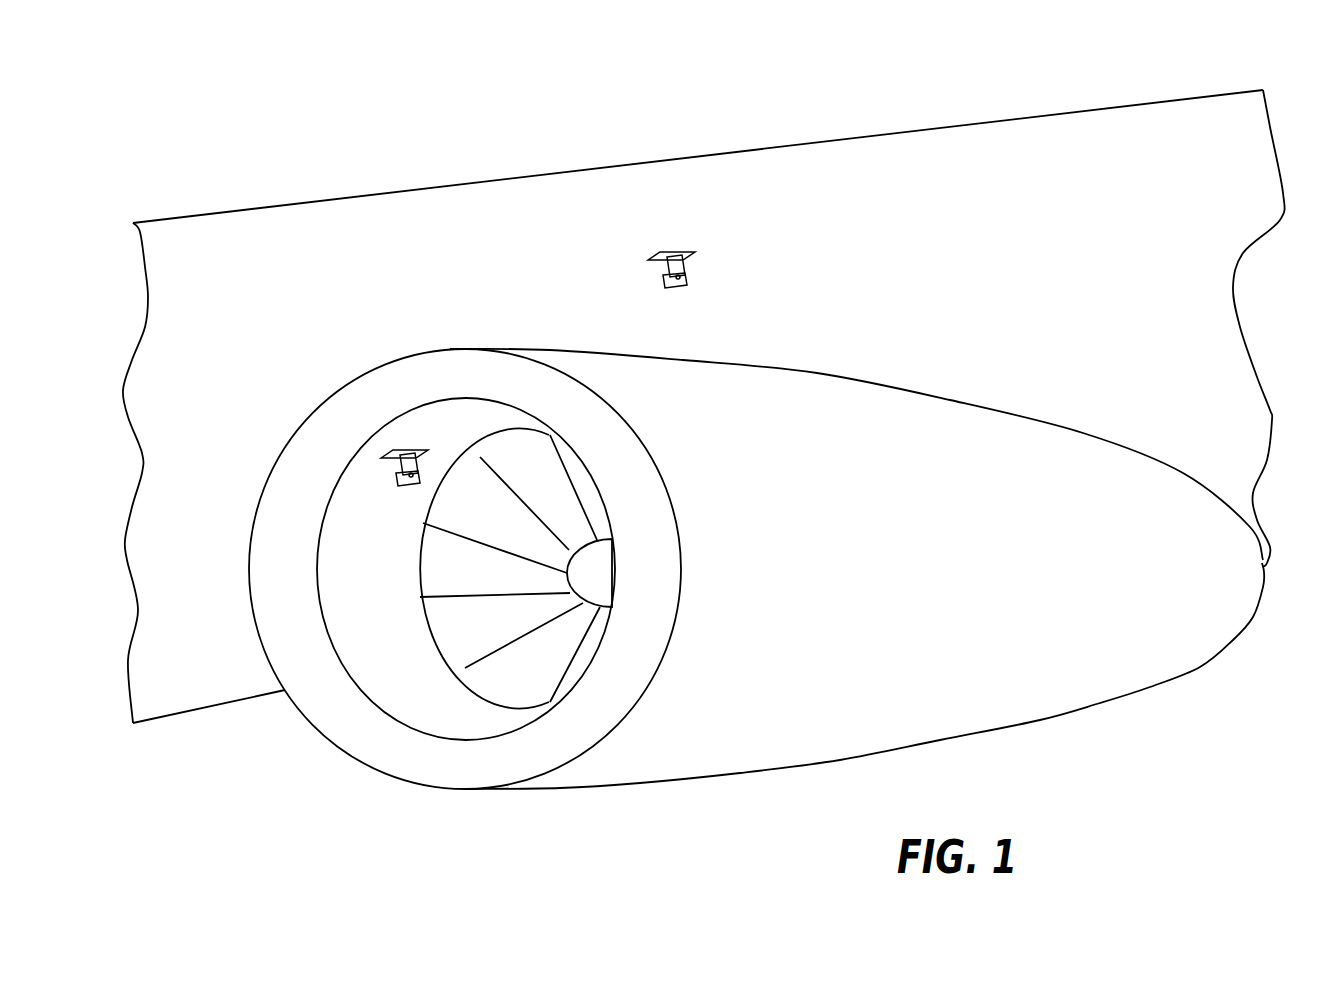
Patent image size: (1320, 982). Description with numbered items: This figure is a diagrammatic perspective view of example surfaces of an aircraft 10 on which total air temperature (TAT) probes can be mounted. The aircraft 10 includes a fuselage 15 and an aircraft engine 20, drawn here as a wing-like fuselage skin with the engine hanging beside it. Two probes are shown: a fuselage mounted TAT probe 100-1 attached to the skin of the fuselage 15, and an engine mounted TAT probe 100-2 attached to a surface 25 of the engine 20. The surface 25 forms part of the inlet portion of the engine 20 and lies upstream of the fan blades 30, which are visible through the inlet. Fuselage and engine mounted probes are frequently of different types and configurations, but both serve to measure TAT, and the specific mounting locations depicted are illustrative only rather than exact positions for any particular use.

The aircraft 10 is at (691, 462).
The fuselage 15 is at (570, 213).
The aircraft engine 20 is at (827, 377).
The surface 25 is at (413, 705).
The fan blades 30 is at (530, 662).
The fuselage mounted TAT probe 100-1 is at (668, 272).
The engine mounted TAT probe 100-2 is at (390, 486).